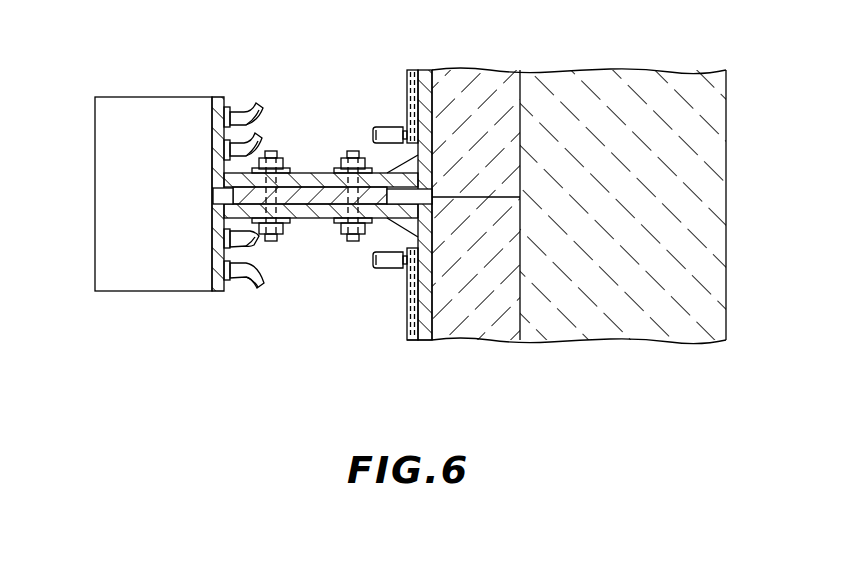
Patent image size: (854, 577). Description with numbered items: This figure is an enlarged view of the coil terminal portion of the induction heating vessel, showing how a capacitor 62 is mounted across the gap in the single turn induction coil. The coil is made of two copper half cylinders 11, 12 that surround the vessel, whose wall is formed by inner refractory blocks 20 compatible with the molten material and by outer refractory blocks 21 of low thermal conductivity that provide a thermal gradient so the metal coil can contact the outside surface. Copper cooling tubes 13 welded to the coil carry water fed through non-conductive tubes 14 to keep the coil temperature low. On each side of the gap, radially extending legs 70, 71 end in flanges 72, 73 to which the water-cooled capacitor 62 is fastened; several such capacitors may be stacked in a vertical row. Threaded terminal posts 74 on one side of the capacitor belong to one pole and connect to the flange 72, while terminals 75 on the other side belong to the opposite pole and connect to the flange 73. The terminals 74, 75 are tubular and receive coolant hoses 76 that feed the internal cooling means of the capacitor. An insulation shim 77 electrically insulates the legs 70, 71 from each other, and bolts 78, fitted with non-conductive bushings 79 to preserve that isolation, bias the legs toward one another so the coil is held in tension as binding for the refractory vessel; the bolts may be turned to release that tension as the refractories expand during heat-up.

The half cylinder of induction coil 11 is at (430, 340).
The half cylinder of induction coil 12 is at (423, 70).
The cooling tubes 13 is at (407, 78).
The non-conductive tubes 14 is at (395, 127).
The refractory blocks 20 is at (617, 70).
The outer refractory blocks 21 is at (497, 70).
The capacitor 62 is at (106, 97).
The leg 70 is at (249, 173).
The leg 71 is at (300, 223).
The flange 72 is at (218, 97).
The flange 73 is at (218, 292).
The threaded terminal posts 74 is at (229, 107).
The terminals 75 is at (232, 279).
The coolant hoses 76 is at (259, 138).
The insulation shim 77 is at (214, 196).
The bolts 78 is at (273, 152).
The non-conductive bushings 79 is at (341, 168).